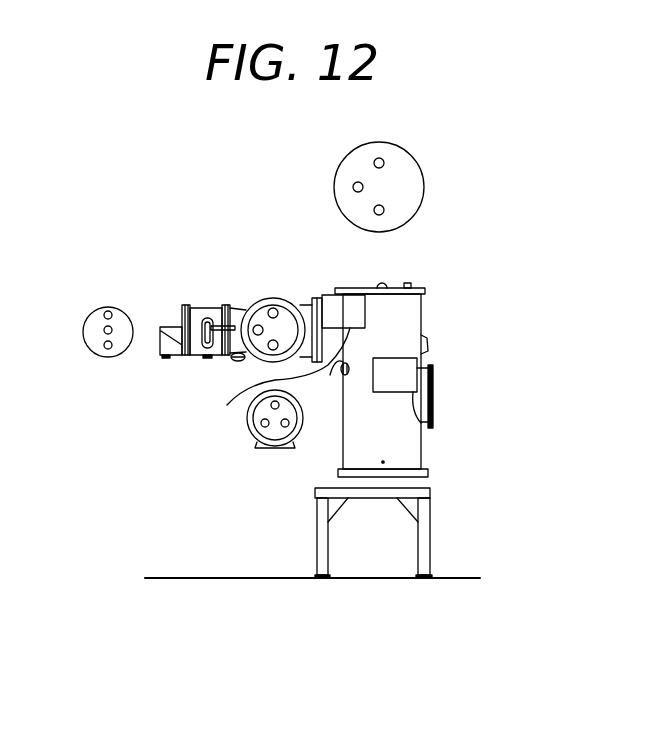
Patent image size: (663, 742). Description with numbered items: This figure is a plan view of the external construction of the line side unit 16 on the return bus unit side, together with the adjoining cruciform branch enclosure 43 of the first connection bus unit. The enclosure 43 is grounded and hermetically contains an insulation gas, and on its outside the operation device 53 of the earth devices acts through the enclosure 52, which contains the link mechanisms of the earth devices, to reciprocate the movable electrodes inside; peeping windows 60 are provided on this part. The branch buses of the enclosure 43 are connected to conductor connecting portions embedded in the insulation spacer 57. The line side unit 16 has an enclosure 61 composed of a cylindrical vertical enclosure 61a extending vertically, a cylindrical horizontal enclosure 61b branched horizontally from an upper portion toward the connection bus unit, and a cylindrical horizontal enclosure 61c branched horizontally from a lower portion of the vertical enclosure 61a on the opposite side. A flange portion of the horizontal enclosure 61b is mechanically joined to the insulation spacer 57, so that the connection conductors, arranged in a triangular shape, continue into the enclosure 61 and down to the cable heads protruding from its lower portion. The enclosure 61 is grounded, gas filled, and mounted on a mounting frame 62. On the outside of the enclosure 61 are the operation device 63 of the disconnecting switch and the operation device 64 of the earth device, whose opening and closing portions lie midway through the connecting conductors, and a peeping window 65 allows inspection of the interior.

The line side unit 16 is at (478, 257).
The operation device of the earth device 53 is at (161, 327).
The enclosure containing link mechanisms of the earth devices 52 is at (210, 307).
The cruciform branch enclosure 43 is at (243, 302).
The insulation spacer 57 is at (315, 297).
The operation device of the disconnecting switch 63 is at (332, 305).
The enclosure 61 is at (422, 323).
The operation device of the earth device 64 is at (402, 377).
The horizontal enclosure 61c is at (422, 407).
The vertical enclosure 61a is at (403, 443).
The mounting frame 62 is at (430, 535).
The peeping windows 60 is at (240, 365).
The horizontal enclosure 61b is at (269, 382).
The peeping window 65 is at (250, 427).